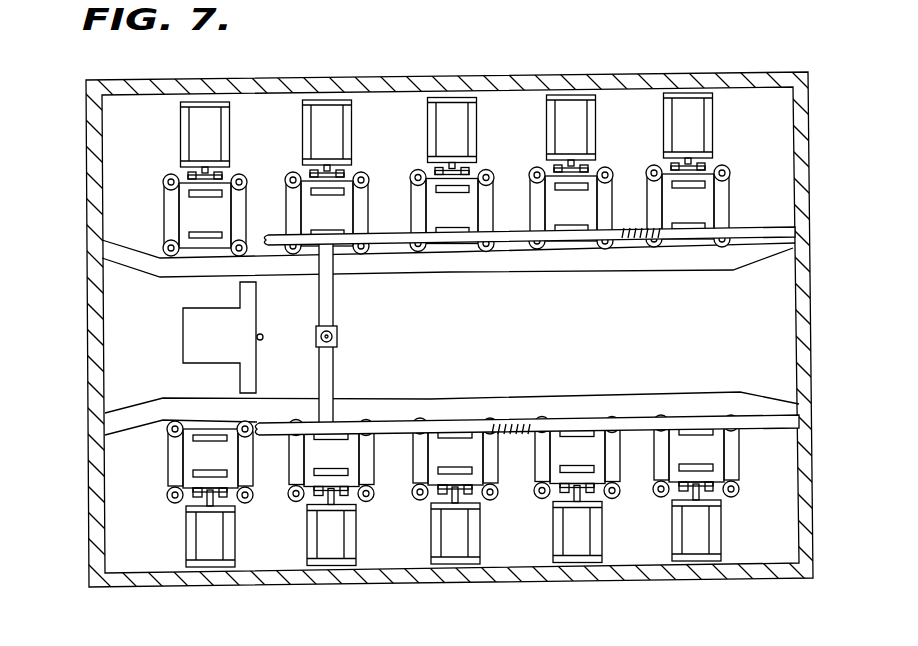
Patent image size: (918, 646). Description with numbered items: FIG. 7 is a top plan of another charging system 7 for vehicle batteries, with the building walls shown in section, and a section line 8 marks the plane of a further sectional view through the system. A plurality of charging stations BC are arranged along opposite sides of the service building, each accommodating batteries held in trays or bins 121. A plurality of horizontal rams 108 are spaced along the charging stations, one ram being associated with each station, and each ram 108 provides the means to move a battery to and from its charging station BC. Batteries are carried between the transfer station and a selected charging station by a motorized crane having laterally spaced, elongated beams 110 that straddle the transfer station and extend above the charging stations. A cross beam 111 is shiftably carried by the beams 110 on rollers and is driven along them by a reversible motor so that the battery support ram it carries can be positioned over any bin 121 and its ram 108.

The FIG. 7 charging system 7 is at (148, 356).
The section line 8- 8 is at (381, 25).
The horizontal ram 108 is at (570, 112).
The elongated beam 110 is at (508, 238).
The cross beam 111 is at (333, 362).
The tray or bin 121 is at (168, 208).
The charging station BC is at (486, 152).